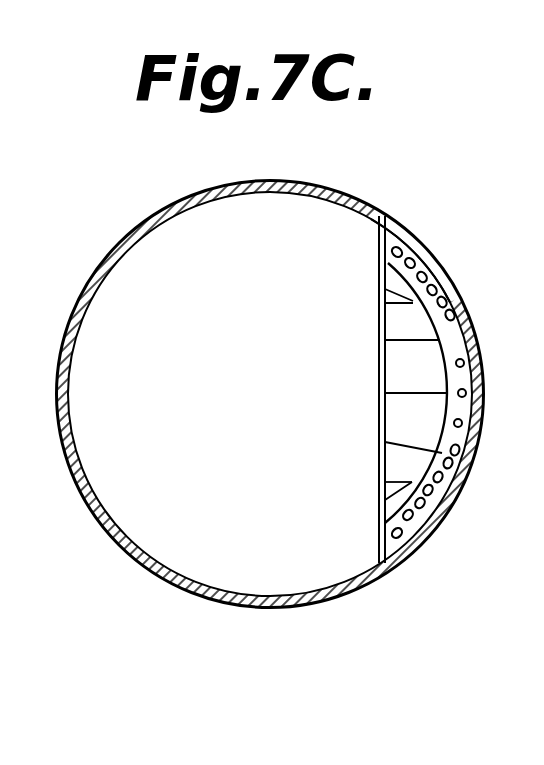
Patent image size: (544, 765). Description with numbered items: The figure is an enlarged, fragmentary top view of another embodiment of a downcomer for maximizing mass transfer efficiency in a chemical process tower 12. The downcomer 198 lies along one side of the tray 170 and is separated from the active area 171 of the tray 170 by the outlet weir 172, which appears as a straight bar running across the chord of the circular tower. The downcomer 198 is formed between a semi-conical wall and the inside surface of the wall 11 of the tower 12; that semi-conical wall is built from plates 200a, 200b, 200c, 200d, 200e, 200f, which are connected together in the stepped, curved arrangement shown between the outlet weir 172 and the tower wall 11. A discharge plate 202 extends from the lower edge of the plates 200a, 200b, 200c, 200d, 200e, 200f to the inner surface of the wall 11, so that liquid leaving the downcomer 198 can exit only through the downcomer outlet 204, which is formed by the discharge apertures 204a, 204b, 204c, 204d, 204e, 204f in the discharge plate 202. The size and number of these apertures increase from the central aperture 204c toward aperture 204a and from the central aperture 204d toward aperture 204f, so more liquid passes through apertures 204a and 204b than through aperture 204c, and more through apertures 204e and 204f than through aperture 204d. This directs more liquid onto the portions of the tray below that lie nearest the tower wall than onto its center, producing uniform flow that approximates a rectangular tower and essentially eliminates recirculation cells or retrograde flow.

The wall 11 is at (108, 255).
The tower 12 is at (171, 194).
The tray 170 is at (79, 483).
The active area 171 is at (241, 369).
The outlet weir 172 is at (379, 235).
The downcomer 198 is at (434, 358).
The plate 200a is at (391, 289).
The plate 200b is at (391, 338).
The plate 200c is at (391, 389).
The plate 200d is at (390, 436).
The plate 200e is at (391, 474).
The plate 200f is at (391, 499).
The discharge plate 202 is at (481, 417).
The downcomer outlet 204 is at (428, 268).
The discharge aperture 204a is at (410, 244).
The discharge aperture 204b is at (457, 302).
The discharge aperture 204c is at (480, 364).
The discharge aperture 204d is at (467, 443).
The discharge aperture 204e is at (457, 483).
The discharge aperture 204f is at (417, 546).